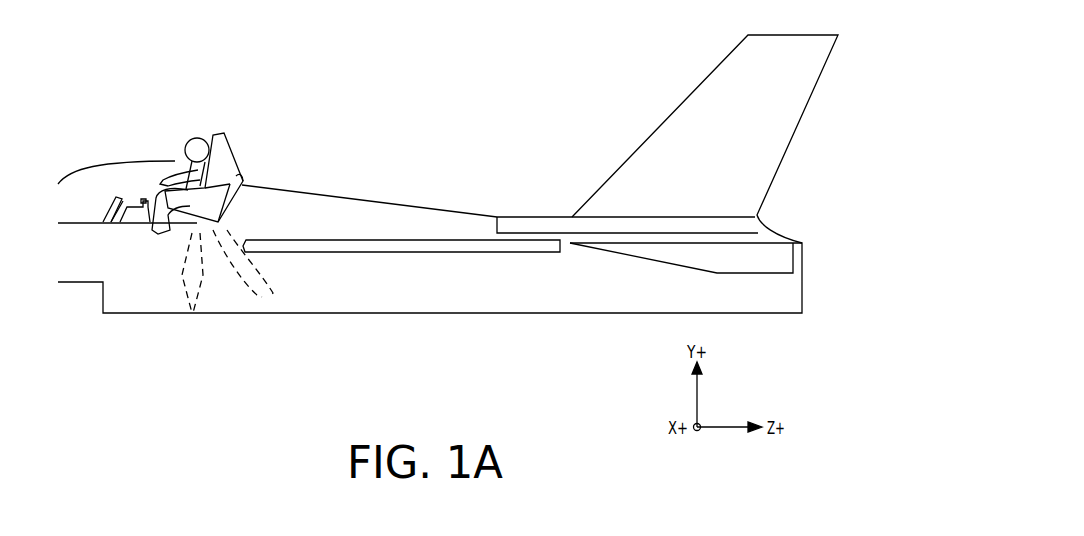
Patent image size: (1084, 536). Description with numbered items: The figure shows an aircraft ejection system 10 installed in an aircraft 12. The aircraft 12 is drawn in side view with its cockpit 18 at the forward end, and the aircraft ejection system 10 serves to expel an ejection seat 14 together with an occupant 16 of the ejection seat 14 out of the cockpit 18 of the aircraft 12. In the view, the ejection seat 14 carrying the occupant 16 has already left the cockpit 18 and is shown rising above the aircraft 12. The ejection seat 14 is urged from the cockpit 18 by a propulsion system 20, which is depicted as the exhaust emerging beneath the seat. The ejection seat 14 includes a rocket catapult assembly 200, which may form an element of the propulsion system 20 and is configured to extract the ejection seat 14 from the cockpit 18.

The aircraft ejection system 10 is at (362, 108).
The aircraft 12 is at (463, 289).
The ejection seat 14 is at (228, 137).
The occupant 16 is at (190, 142).
The cockpit 18 is at (91, 207).
The propulsion system 20 is at (190, 270).
The rocket catapult assembly 200 is at (236, 173).